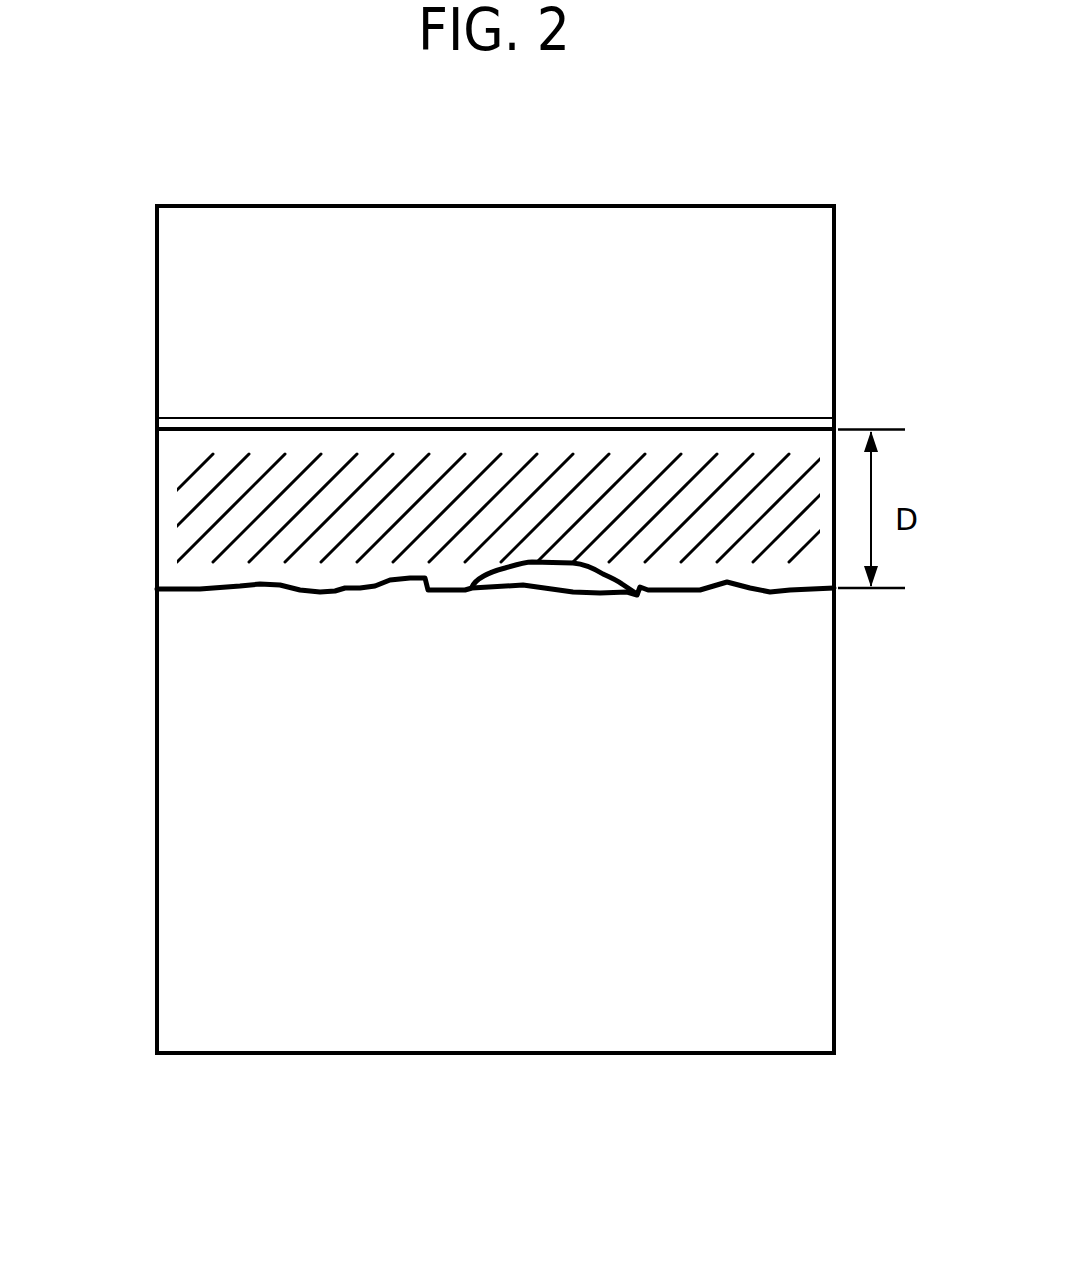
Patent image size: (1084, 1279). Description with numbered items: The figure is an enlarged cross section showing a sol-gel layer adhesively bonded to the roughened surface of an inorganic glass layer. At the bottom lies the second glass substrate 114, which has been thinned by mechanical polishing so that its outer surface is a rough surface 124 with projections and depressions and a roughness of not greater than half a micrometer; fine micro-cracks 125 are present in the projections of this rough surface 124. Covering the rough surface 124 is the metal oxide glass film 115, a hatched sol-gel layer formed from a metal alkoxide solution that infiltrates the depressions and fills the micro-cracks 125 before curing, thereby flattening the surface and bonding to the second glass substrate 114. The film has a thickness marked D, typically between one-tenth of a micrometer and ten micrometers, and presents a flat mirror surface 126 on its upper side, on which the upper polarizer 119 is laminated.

The second glass substrate 114 is at (552, 1038).
The metal oxide glass film 115 is at (192, 476).
The upper polarizer 119 is at (653, 226).
The rough surface 124 is at (200, 590).
The micro-cracks 125 is at (600, 597).
The mirror surface 126 is at (767, 429).